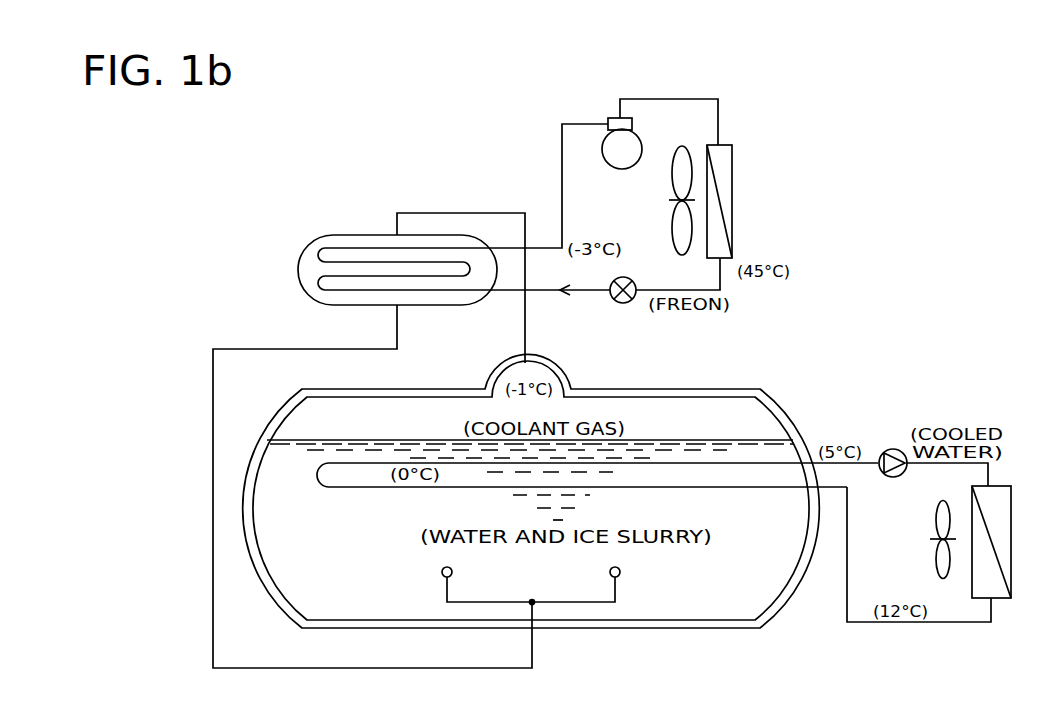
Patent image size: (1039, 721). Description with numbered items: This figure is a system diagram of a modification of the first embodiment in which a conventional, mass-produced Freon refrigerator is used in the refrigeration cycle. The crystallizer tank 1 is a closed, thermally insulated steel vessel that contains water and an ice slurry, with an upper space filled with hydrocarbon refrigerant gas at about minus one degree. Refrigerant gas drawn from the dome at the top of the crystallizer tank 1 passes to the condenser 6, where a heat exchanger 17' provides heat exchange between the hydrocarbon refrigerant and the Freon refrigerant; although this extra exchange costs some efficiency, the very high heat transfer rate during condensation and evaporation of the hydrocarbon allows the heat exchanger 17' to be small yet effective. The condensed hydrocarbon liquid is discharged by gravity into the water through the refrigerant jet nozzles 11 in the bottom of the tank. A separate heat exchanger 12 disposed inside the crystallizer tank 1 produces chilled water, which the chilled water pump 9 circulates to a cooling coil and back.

The crystallizer tank 1 is at (706, 629).
The condenser 6 is at (329, 235).
The heat exchanger 17' is at (407, 236).
The heat exchanger 12 is at (755, 460).
The chilled water pump 9 is at (890, 449).
The refrigerant jet nozzles 11 is at (618, 575).